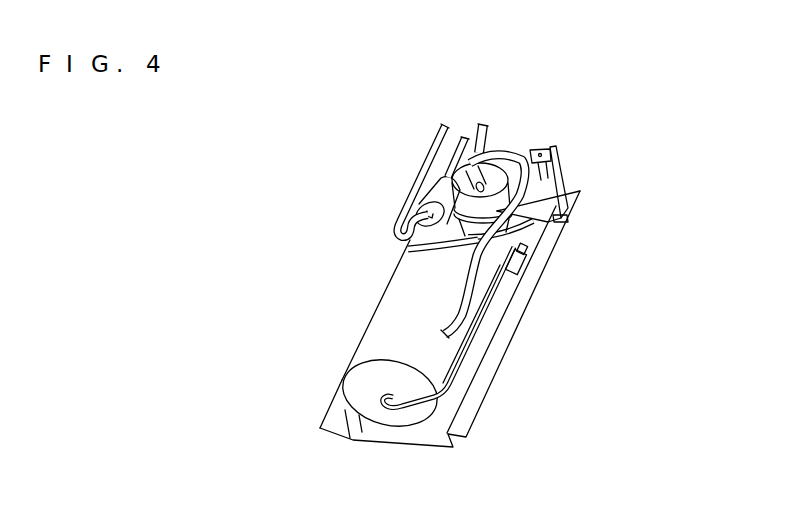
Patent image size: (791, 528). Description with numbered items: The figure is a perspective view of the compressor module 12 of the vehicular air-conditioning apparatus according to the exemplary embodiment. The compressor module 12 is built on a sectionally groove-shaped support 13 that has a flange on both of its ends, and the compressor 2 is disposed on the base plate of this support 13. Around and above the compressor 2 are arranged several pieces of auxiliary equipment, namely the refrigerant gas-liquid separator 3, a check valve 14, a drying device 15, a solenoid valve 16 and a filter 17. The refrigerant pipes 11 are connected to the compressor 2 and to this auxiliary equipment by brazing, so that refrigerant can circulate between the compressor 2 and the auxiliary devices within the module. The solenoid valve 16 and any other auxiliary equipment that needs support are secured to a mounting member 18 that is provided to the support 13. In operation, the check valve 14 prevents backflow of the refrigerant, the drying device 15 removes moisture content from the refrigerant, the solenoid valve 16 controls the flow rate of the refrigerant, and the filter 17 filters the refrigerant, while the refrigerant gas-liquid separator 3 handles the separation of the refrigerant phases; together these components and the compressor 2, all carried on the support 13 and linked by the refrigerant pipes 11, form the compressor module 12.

The compressor 2 is at (383, 305).
The refrigerant gas-liquid separator 3 is at (494, 178).
The refrigerant pipes 11 is at (526, 246).
The compressor module 12 is at (494, 424).
The support 13 is at (509, 352).
The check valve 14 is at (522, 274).
The drying device 15 is at (424, 183).
The solenoid valve 16 is at (543, 147).
The filter 17 is at (552, 222).
The mounting member 18 is at (566, 205).